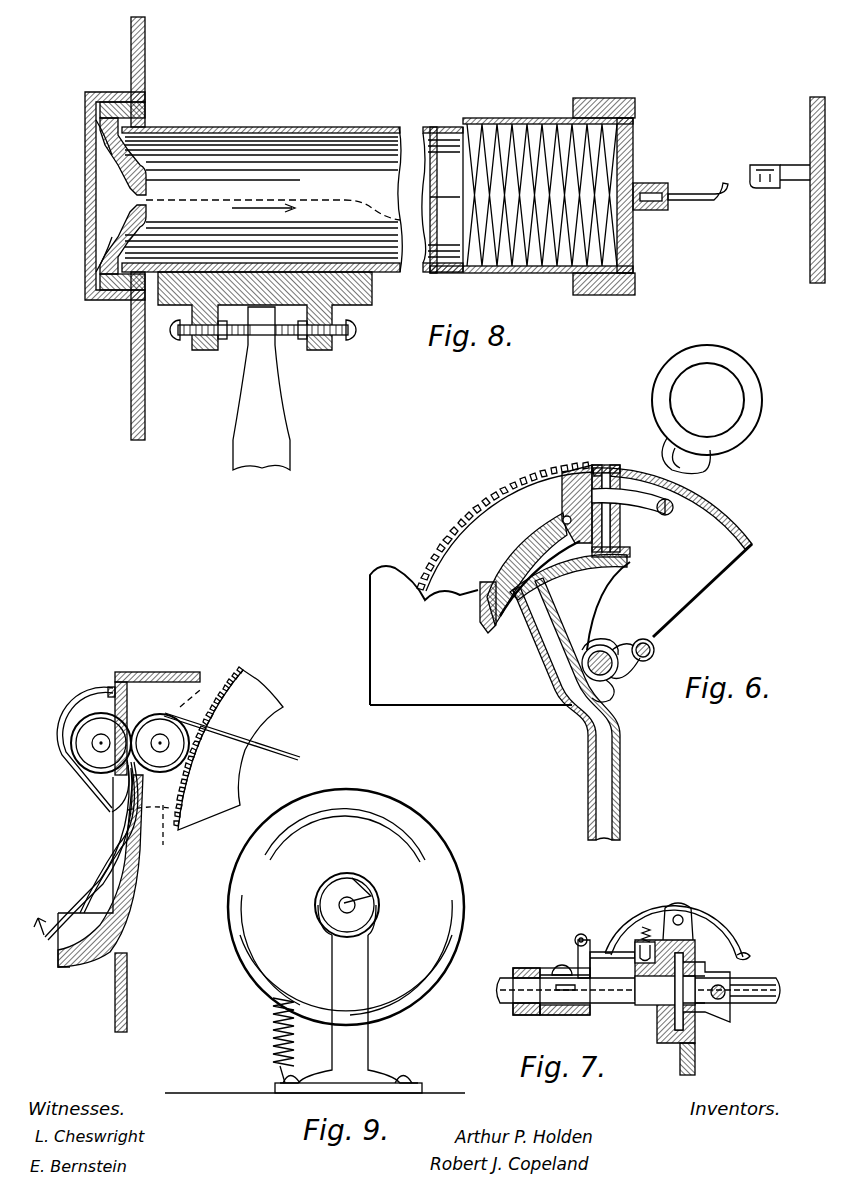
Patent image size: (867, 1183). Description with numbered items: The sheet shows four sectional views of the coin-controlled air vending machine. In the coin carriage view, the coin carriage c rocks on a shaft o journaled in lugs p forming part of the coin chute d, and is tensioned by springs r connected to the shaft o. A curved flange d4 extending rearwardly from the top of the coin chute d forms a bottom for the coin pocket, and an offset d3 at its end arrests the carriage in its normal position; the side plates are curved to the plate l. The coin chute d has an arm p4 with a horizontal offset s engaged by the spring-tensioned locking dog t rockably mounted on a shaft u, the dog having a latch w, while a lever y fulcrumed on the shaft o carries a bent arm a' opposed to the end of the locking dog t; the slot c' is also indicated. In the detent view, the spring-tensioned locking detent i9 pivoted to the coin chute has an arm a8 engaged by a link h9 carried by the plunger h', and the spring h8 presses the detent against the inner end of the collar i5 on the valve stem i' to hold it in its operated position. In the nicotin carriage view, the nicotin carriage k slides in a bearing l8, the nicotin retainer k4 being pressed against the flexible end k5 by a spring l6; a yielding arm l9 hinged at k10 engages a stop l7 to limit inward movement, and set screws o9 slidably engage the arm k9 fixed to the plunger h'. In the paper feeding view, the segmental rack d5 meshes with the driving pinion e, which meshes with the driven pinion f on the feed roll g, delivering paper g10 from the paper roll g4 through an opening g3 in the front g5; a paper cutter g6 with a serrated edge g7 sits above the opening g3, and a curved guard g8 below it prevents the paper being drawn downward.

In FIG. 8, the bearing l8 is at (145, 80).
In FIG. 8, the flexible end k5 is at (108, 202).
In FIG. 8, the nicotin retainer k4 is at (292, 199).
In FIG. 8, the nicotin carriage k is at (362, 306).
In FIG. 8, the arm k9 is at (268, 428).
In FIG. 8, the set screws o9 is at (193, 338).
In FIG. 8, the spring l6 is at (528, 118).
In FIG. 8, the hinge k10 is at (660, 183).
In FIG. 8, the yielding arm l9 is at (696, 197).
In FIG. 8, the stop l7 is at (768, 177).
In FIG. 6, the lever y is at (722, 352).
In FIG. 6, the plate l is at (737, 522).
In FIG. 6, the latch w is at (487, 580).
In FIG. 6, the arm p4 is at (471, 635).
In FIG. 6, the locking dog t is at (528, 540).
In FIG. 6, the horizontal offset s is at (500, 612).
In FIG. 6, the shaft u is at (562, 505).
In FIG. 6, the coin carriage c is at (609, 471).
In FIG. 6, the slot c' is at (595, 463).
In FIG. 6, the bent arm a' is at (690, 473).
In FIG. 6, the offset d3 is at (630, 552).
In FIG. 6, the curved flange d4 is at (600, 572).
In FIG. 6, the coin chute d is at (597, 742).
In FIG. 7, the coin chute d is at (660, 1045).
In FIG. 6, the lugs p is at (613, 693).
In FIG. 6, the shaft o is at (615, 676).
In FIG. 6, the springs r is at (655, 650).
In FIG. 9, the paper cutter g6 is at (80, 700).
In FIG. 9, the feed roll g is at (162, 714).
In FIG. 9, the driven pinion f is at (232, 712).
In FIG. 9, the segmental rack d5 is at (228, 748).
In FIG. 9, the driving pinion e is at (149, 834).
In FIG. 9, the serrated edge g7 is at (110, 810).
In FIG. 9, the opening g3 is at (112, 815).
In FIG. 9, the paper g10 is at (82, 876).
In FIG. 9, the front g5 is at (125, 950).
In FIG. 9, the curved guard g8 is at (62, 966).
In FIG. 9, the paper roll g4 is at (346, 941).
In FIG. 7, the valve stem i' is at (641, 1027).
In FIG. 7, the plunger h' is at (540, 1009).
In FIG. 7, the link h9 is at (575, 965).
In FIG. 7, the arm a8 is at (595, 952).
In FIG. 7, the spring h8 is at (648, 940).
In FIG. 7, the locking detent i9 is at (712, 925).
In FIG. 7, the collar i5 is at (728, 972).